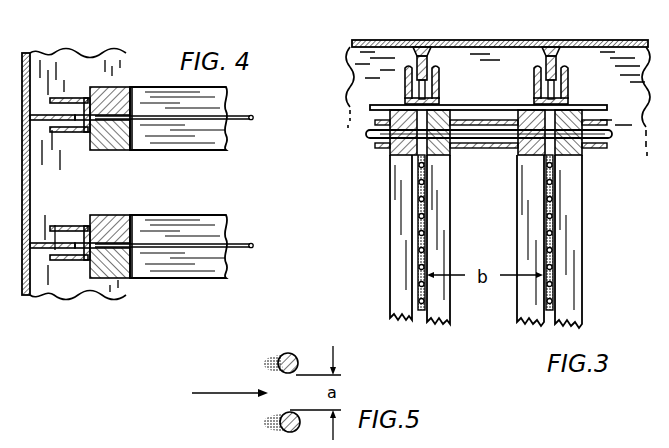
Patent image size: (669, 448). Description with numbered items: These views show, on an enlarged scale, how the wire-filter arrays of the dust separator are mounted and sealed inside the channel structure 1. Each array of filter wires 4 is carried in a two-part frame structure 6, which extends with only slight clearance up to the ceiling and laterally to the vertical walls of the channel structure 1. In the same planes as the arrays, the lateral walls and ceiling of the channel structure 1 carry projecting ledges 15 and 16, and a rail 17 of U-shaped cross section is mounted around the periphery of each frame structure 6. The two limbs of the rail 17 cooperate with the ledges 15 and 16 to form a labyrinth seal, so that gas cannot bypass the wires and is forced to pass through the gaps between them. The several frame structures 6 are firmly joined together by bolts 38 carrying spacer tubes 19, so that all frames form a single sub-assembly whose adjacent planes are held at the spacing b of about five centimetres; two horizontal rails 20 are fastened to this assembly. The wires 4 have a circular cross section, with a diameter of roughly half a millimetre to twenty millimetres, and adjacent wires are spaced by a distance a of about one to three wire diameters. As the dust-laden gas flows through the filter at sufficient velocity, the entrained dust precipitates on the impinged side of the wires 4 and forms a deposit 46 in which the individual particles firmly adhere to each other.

In FIG. 4, the channel structure 1 is at (31, 183).
In FIG. 3, the channel structure 1 is at (626, 42).
In FIG. 4, the filter wires 4 is at (250, 121).
In FIG. 3, the filter wires 4 is at (418, 205).
In FIG. 5, the filter wires 4 is at (293, 354).
In FIG. 4, the frame structure 6 is at (112, 98).
In FIG. 3, the frame structure 6 is at (522, 213).
In FIG. 4, the projecting ledge 15 is at (76, 133).
In FIG. 3, the projecting ledge 16 is at (438, 47).
In FIG. 4, the rail of U-shaped cross section 17 is at (70, 97).
In FIG. 3, the rail of U-shaped cross section 17 is at (583, 40).
In FIG. 3, the spacer tubes 19 is at (488, 150).
In FIG. 3, the horizontal rails 20 is at (602, 105).
In FIG. 3, the bolts 38 is at (613, 141).
In FIG. 5, the deposit 46 is at (268, 355).